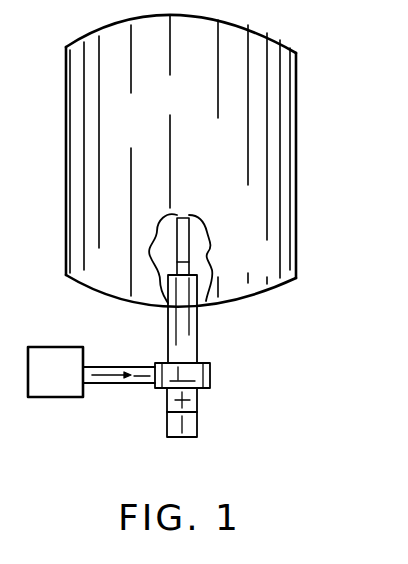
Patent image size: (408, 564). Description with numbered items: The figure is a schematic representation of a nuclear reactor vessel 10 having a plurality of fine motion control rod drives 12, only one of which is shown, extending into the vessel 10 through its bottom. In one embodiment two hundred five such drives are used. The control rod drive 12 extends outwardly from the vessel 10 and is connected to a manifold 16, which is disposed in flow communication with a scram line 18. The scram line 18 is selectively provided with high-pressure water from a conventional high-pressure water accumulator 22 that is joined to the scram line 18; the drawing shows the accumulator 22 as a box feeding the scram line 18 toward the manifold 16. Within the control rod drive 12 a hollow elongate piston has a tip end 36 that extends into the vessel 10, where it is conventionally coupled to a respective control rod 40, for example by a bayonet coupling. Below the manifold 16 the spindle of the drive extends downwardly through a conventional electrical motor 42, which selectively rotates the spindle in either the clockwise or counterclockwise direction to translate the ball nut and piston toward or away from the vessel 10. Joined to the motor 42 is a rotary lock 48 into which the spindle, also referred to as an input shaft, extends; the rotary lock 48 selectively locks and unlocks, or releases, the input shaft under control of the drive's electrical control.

The nuclear reactor vessel 10 is at (296, 104).
The fine motion control rod drive 12 is at (198, 330).
The manifold 16 is at (210, 378).
The scram line 18 is at (118, 385).
The high-pressure water accumulator 22 is at (37, 385).
The tip end 36 is at (198, 263).
The control rod 40 is at (189, 233).
The electrical motor 42 is at (197, 400).
The rotary lock 48 is at (197, 426).